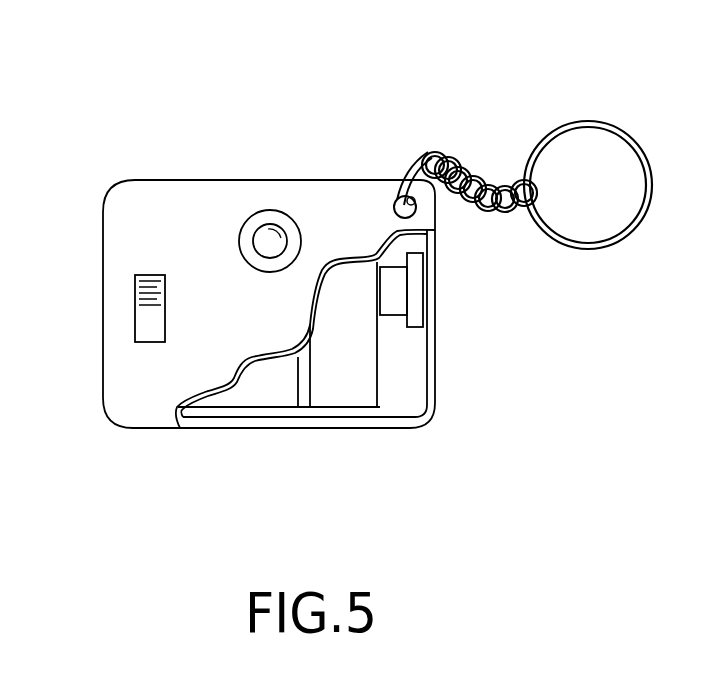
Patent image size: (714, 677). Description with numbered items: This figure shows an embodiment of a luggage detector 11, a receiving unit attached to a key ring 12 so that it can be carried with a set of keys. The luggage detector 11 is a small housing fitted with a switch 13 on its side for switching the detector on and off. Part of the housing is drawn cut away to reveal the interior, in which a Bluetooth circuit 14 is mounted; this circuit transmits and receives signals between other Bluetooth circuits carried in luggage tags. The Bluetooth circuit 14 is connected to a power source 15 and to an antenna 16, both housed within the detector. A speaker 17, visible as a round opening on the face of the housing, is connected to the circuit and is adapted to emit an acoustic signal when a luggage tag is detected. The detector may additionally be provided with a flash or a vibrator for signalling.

The luggage detector 11 is at (158, 198).
The key ring 12 is at (590, 123).
The switch 13 is at (145, 313).
The Bluetooth circuit 14 is at (345, 395).
The power source 15 is at (250, 392).
The antenna 16 is at (418, 293).
The speaker 17 is at (266, 233).